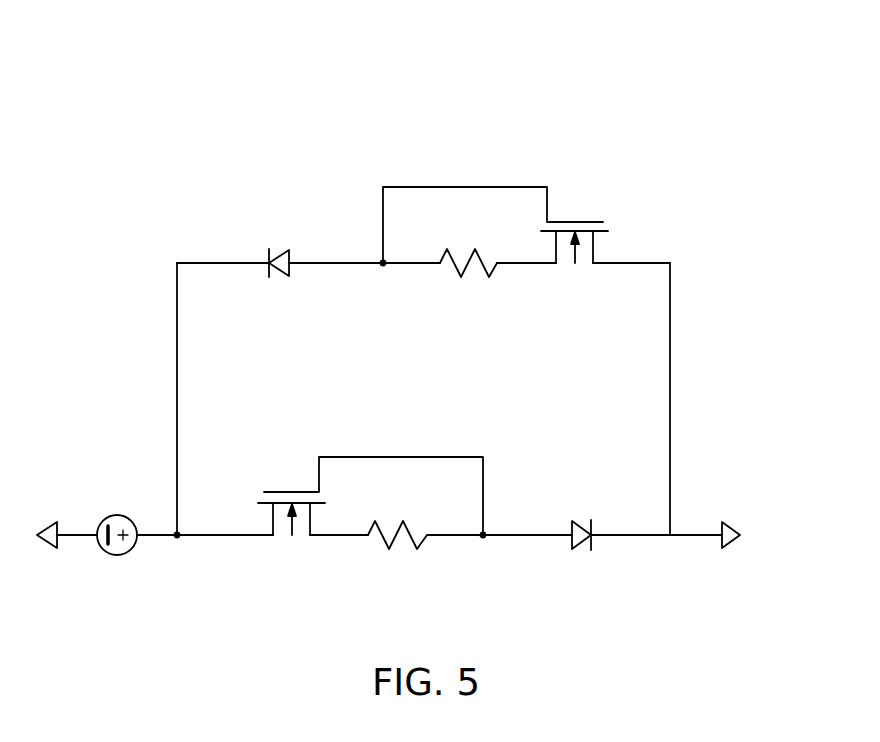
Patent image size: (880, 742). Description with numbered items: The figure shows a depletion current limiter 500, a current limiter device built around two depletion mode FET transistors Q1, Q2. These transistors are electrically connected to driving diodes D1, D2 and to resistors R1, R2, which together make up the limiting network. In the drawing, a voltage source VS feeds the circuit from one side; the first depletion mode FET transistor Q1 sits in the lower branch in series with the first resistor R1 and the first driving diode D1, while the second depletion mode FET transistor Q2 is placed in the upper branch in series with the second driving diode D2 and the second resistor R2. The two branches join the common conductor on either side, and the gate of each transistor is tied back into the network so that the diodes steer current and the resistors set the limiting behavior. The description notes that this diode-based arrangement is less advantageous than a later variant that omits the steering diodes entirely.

The depletion current limiter 500 is at (674, 58).
The voltage source VS is at (117, 554).
The depletion mode FET transistor Q1 is at (291, 538).
The resistor R1 is at (397, 556).
The driving diode D1 is at (582, 556).
The driving diode D2 is at (279, 245).
The resistor R2 is at (468, 283).
The depletion mode FET transistor Q2 is at (574, 264).